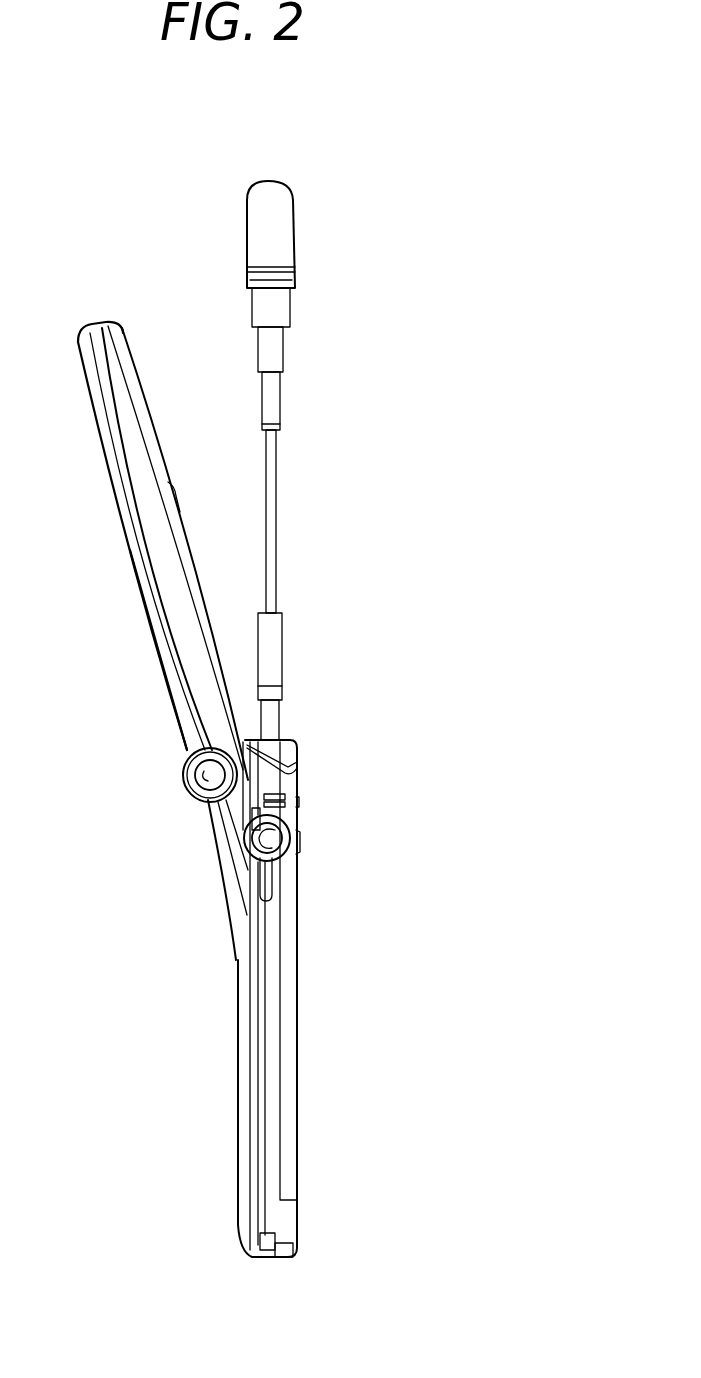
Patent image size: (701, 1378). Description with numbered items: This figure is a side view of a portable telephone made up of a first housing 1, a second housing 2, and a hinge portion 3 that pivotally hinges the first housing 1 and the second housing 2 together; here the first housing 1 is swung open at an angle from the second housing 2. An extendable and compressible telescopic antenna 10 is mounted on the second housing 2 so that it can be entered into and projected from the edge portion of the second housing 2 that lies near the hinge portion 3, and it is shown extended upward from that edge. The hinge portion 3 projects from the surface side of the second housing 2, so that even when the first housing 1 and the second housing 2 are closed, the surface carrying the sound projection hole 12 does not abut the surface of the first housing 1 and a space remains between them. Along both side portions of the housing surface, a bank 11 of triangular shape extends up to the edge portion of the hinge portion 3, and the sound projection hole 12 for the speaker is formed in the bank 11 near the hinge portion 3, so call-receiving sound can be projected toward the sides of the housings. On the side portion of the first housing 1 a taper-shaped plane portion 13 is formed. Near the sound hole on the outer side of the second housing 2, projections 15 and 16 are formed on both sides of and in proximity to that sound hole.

The first housing 1 is at (123, 417).
The second housing 2 is at (250, 1222).
The hinge portion 3 is at (185, 797).
The antenna 10 is at (277, 462).
The bank 11 is at (232, 892).
The sound projection hole 12 is at (215, 832).
The plane portion 13 is at (183, 713).
The projection 15 is at (300, 812).
The projection 16 is at (298, 847).